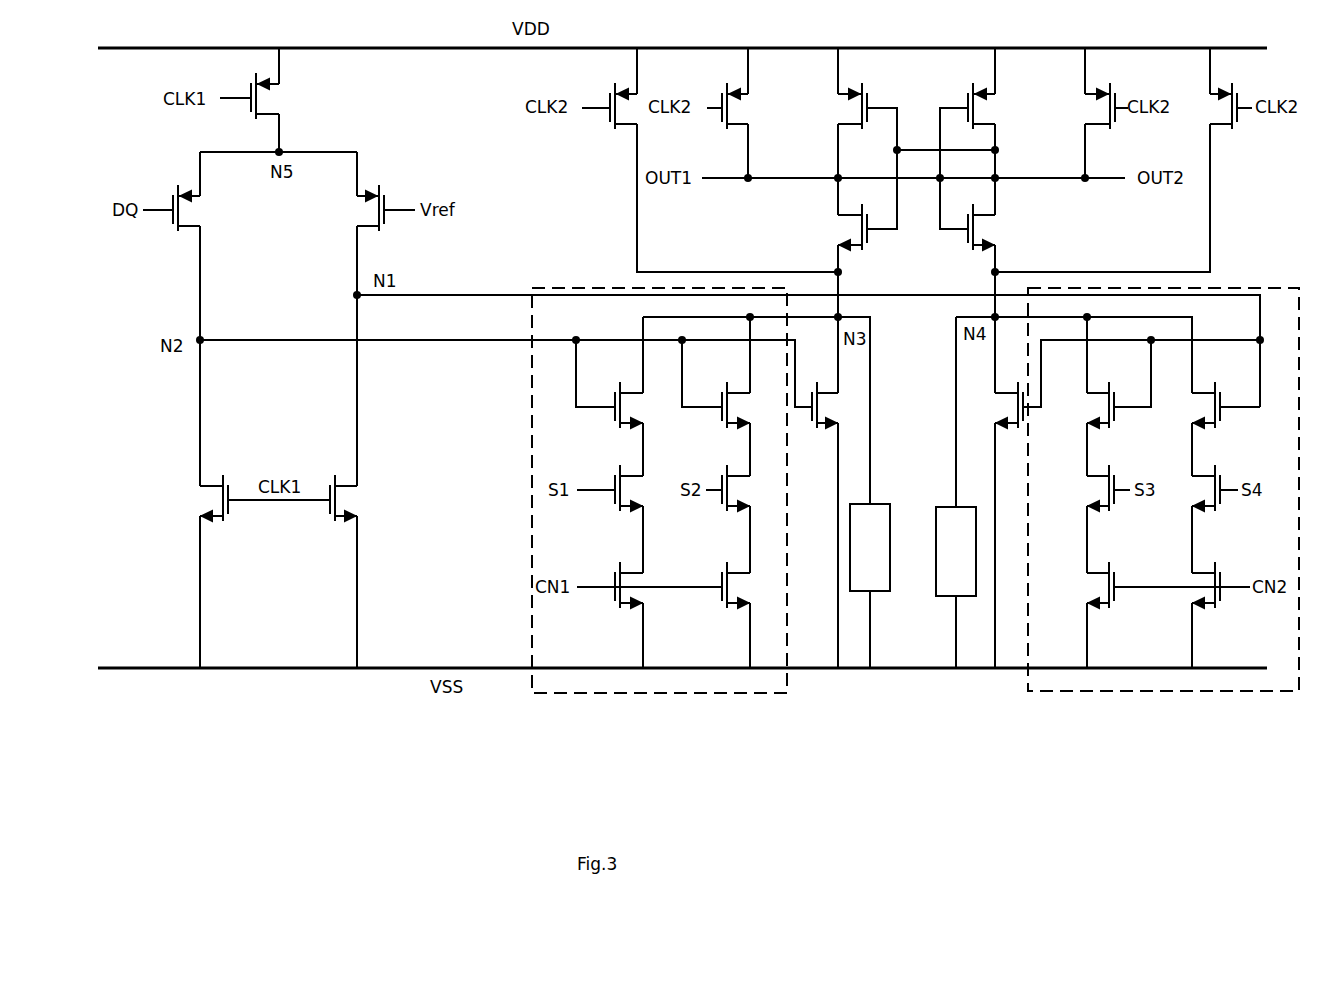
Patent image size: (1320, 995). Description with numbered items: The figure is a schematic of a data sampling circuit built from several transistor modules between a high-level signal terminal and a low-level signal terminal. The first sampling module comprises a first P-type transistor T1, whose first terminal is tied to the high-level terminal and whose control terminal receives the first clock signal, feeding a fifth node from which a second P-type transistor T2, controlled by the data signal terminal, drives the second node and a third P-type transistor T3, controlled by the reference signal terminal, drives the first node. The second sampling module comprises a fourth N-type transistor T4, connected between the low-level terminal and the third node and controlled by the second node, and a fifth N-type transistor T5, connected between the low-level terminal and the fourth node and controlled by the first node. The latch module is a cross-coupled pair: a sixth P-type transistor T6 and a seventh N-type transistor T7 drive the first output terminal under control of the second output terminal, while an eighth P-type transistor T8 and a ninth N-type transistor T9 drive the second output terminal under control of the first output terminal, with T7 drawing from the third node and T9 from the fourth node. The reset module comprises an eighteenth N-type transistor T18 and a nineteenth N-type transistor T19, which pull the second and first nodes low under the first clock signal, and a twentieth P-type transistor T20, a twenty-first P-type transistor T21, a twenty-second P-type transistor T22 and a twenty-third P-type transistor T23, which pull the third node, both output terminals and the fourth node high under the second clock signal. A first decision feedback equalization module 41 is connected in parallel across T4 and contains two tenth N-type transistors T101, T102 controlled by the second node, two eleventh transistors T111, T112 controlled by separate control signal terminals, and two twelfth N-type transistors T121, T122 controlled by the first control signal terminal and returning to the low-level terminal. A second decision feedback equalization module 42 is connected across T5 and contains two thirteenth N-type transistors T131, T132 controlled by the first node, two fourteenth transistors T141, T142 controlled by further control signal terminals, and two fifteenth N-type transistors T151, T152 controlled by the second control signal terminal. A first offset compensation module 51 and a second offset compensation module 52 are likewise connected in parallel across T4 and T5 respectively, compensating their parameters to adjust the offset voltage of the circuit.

The first P-type transistor T1 is at (281, 96).
The second P-type transistor T2 is at (199, 208).
The third P-type transistor T3 is at (354, 208).
The fourth N-type transistor T4 is at (838, 405).
The fifth N-type transistor T5 is at (999, 405).
The sixth P-type transistor T6 is at (843, 106).
The seventh N-type transistor T7 is at (846, 227).
The eighth P-type transistor T8 is at (991, 106).
The ninth N-type transistor T9 is at (992, 227).
The eighteenth N-type transistor T18 is at (198, 498).
The nineteenth N-type transistor T19 is at (361, 498).
The twentieth P-type transistor T20 is at (611, 113).
The twenty-first P-type transistor T21 is at (753, 106).
The twenty-second P-type transistor T22 is at (1087, 106).
The twenty-third P-type transistor T23 is at (1210, 106).
The tenth N-type transistor T101 is at (643, 405).
The tenth N-type transistor T102 is at (751, 405).
The eleventh transistor T111 is at (616, 499).
The eleventh transistor T112 is at (751, 488).
The twelfth N-type transistor T121 is at (616, 599).
The twelfth N-type transistor T122 is at (751, 585).
The thirteenth N-type transistor T131 is at (1083, 405).
The thirteenth N-type transistor T132 is at (1230, 410).
The fourteenth transistor T141 is at (1083, 488).
The fourteenth transistor T142 is at (1225, 498).
The fifteenth N-type transistor T151 is at (1077, 585).
The fifteenth N-type transistor T152 is at (1179, 590).
The first decision feedback equalization module 41 is at (592, 693).
The second decision feedback equalization module 42 is at (1132, 691).
The first offset compensation module 51 is at (867, 593).
The second offset compensation module 52 is at (960, 598).